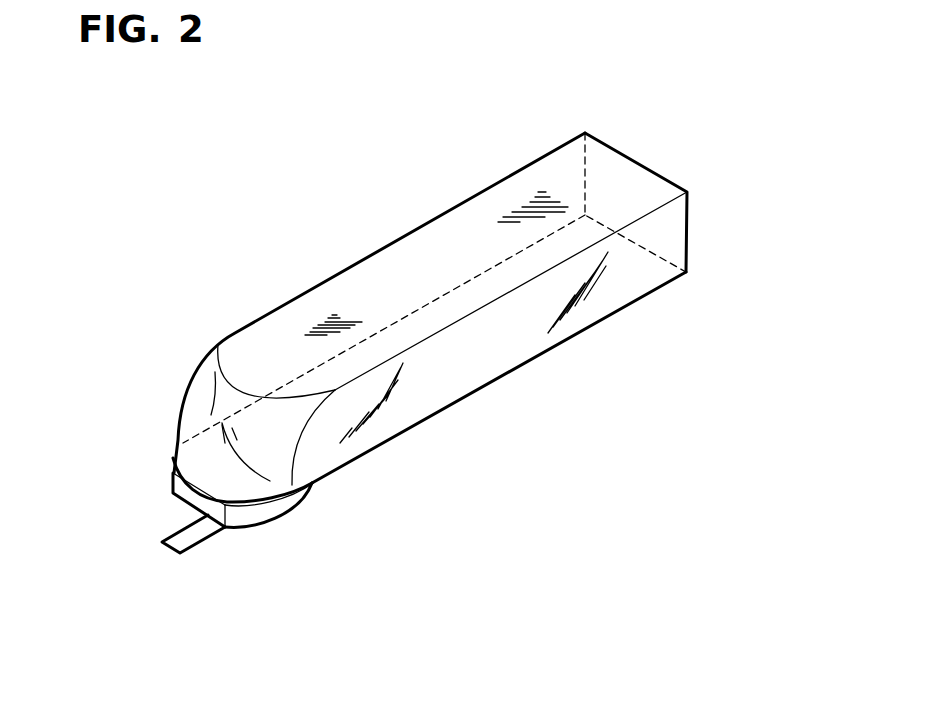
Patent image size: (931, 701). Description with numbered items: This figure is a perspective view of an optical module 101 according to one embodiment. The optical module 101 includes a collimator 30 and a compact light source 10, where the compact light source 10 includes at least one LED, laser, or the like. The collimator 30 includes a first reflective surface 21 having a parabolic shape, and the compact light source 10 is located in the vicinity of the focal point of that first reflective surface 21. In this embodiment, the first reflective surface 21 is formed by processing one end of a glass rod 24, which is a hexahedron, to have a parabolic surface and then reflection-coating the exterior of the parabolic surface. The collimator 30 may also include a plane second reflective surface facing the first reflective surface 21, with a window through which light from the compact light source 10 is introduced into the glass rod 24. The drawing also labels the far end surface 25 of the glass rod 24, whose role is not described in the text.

The optical module 101 is at (361, 198).
The collimator 30 is at (514, 174).
The end surface of light guide 25 is at (637, 188).
The glass rod 24 is at (282, 327).
The first reflective surface 21 is at (208, 410).
The compact light source 10 is at (272, 529).